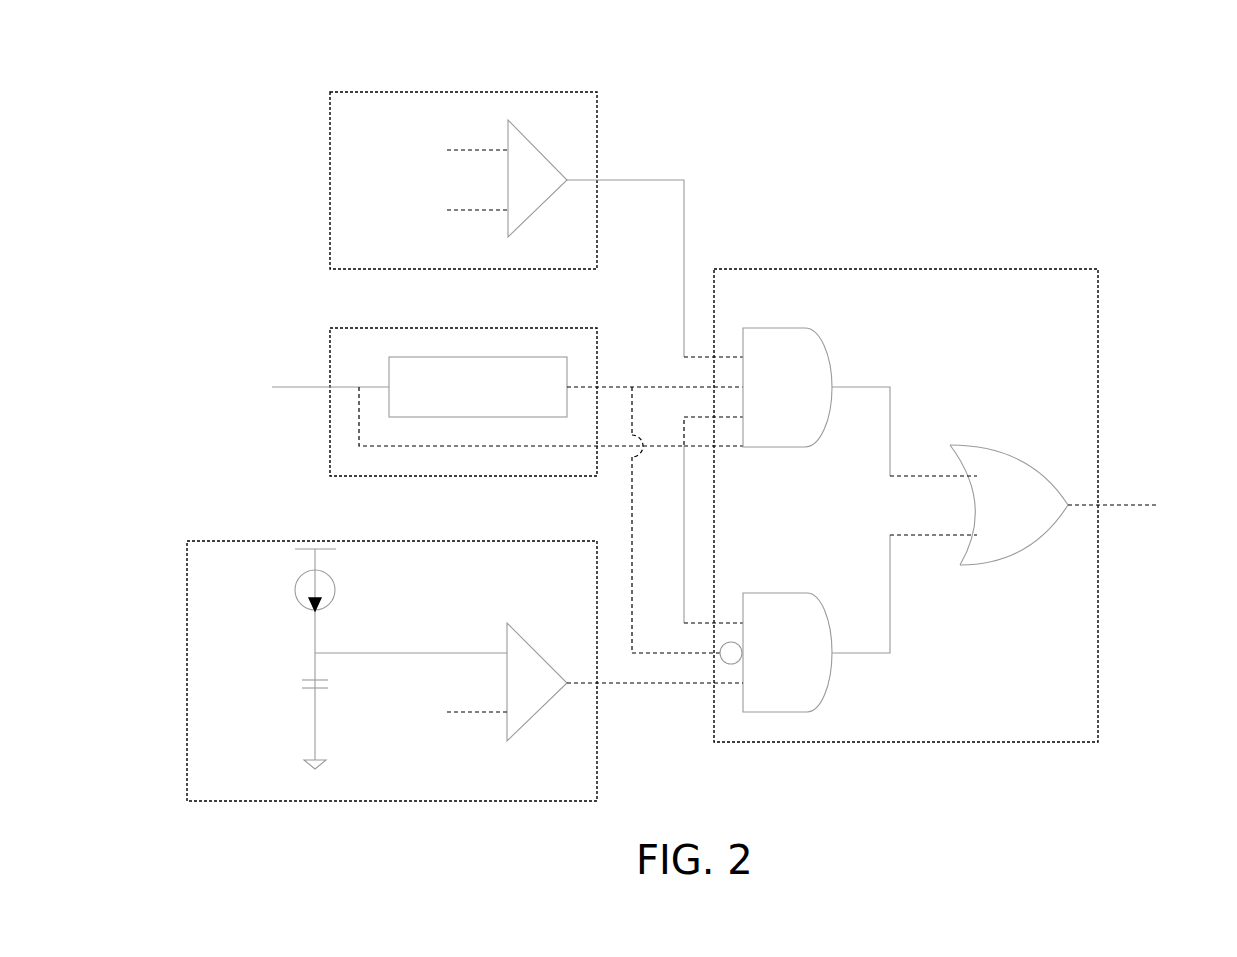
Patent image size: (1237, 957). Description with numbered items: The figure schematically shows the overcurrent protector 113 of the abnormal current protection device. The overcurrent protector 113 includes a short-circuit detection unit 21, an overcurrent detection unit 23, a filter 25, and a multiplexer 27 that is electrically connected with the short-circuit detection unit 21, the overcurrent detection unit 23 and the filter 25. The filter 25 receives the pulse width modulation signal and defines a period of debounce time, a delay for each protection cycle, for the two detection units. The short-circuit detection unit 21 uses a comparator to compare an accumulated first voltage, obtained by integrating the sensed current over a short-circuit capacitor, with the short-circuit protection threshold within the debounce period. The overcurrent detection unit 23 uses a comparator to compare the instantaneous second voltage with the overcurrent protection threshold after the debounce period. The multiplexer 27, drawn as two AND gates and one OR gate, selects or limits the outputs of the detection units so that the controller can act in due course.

The overcurrent protector 113 is at (1163, 114).
The short-circuit detection unit 21 is at (187, 637).
The overcurrent detection unit 23 is at (597, 119).
The filter 25 is at (330, 337).
The multiplexer 27 is at (1098, 325).